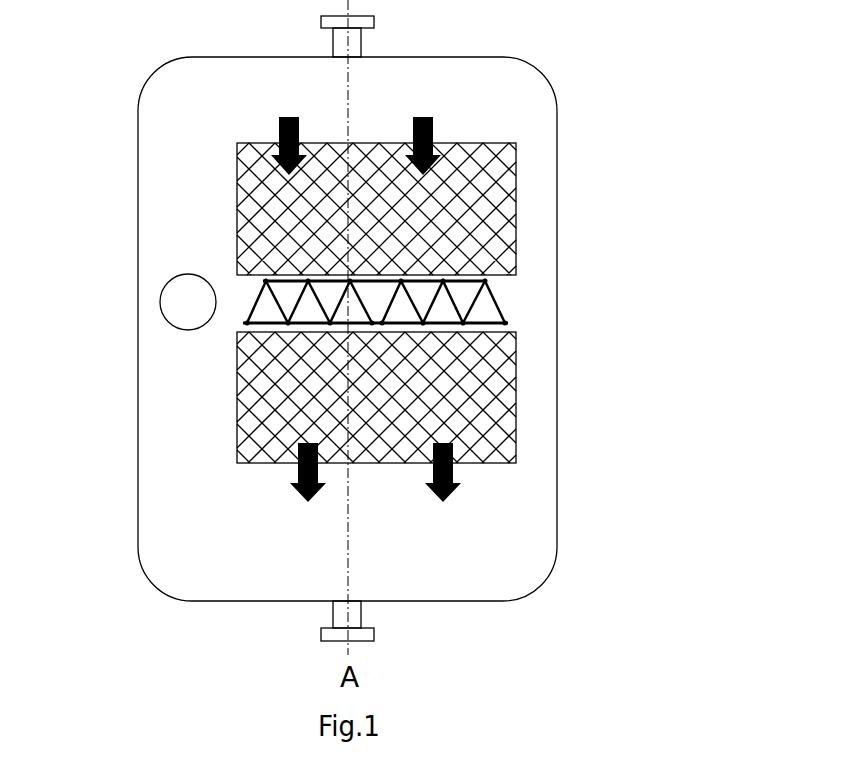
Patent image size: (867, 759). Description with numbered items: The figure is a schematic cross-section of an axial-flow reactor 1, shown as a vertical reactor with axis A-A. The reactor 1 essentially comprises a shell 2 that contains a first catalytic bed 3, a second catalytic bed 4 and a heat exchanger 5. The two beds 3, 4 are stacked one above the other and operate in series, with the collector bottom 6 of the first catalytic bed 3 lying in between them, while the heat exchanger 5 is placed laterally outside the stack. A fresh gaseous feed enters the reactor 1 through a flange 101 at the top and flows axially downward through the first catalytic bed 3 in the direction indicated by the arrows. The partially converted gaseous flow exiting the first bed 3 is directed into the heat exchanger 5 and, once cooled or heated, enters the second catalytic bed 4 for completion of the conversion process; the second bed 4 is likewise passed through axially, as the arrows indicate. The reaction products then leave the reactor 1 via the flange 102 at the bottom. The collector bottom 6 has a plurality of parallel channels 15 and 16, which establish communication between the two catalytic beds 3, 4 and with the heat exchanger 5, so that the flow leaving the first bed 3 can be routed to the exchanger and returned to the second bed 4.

The axial-flow reactor 1 is at (688, 199).
The shell 2 is at (138, 152).
The first catalytic bed 3 is at (488, 168).
The second catalytic bed 4 is at (500, 432).
The heat exchanger 5 is at (188, 302).
The collector bottom 6 is at (538, 311).
The parallel channel 15 is at (288, 293).
The parallel channel 16 is at (262, 307).
The flange 101 is at (362, 50).
The flange 102 is at (362, 613).